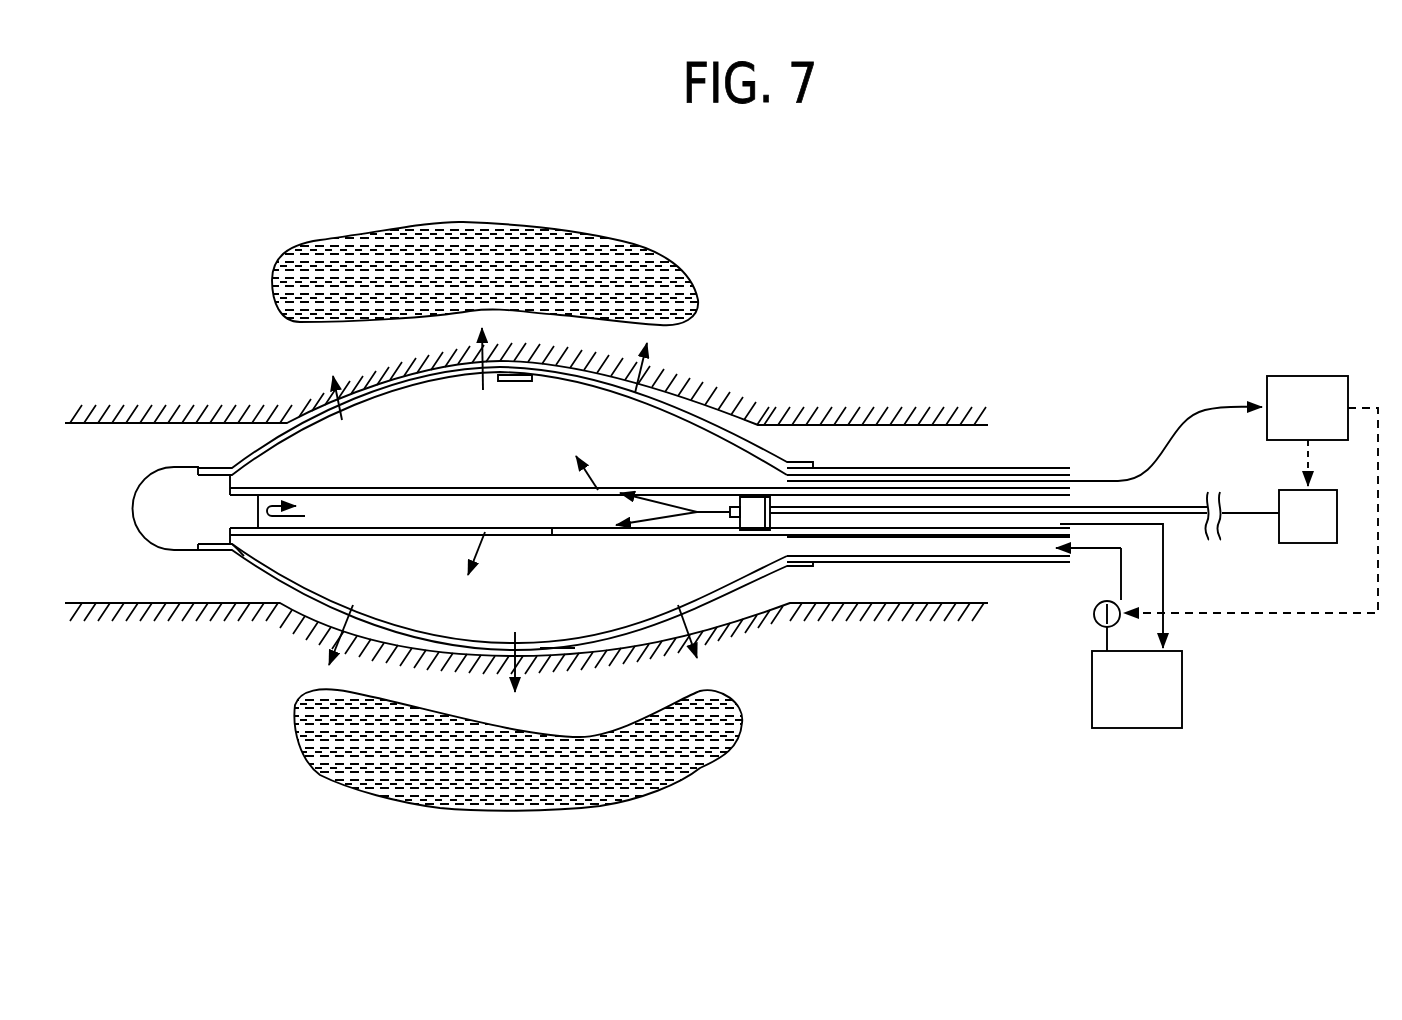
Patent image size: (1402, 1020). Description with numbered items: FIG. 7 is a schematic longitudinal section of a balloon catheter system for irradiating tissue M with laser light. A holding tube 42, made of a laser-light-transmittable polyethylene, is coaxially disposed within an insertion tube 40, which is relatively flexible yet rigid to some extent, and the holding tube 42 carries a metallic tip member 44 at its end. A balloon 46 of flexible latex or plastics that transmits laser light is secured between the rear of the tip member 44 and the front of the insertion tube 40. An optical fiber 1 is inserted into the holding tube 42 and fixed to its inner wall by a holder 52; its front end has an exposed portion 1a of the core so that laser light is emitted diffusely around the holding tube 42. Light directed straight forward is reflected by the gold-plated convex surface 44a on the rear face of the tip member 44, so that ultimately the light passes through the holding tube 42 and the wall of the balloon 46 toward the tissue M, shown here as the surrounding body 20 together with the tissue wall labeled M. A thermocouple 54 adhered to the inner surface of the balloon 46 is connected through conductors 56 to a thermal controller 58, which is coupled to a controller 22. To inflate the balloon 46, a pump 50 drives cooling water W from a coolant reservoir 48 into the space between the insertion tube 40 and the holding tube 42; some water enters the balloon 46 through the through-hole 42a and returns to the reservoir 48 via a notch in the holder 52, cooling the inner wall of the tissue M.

The tissue M is at (136, 420).
The tumor tissue 20 is at (532, 256).
The holding tube 42 is at (1002, 490).
The insertion tube 40 is at (890, 467).
The through-hole 42a is at (390, 508).
The tip member 44 is at (148, 510).
The convex surface 44a is at (243, 518).
The thermocouple 54 is at (513, 384).
The balloon 46 is at (564, 655).
The holder 52 is at (757, 520).
The exposed portion 1a is at (712, 502).
The optical fiber 1 is at (912, 512).
The conductors 56 is at (1118, 480).
The thermal controller 58 is at (1310, 392).
The controller 22 is at (1307, 527).
The cooling water W is at (1112, 572).
The pump 50 is at (1095, 620).
The coolant reservoir 48 is at (1172, 692).